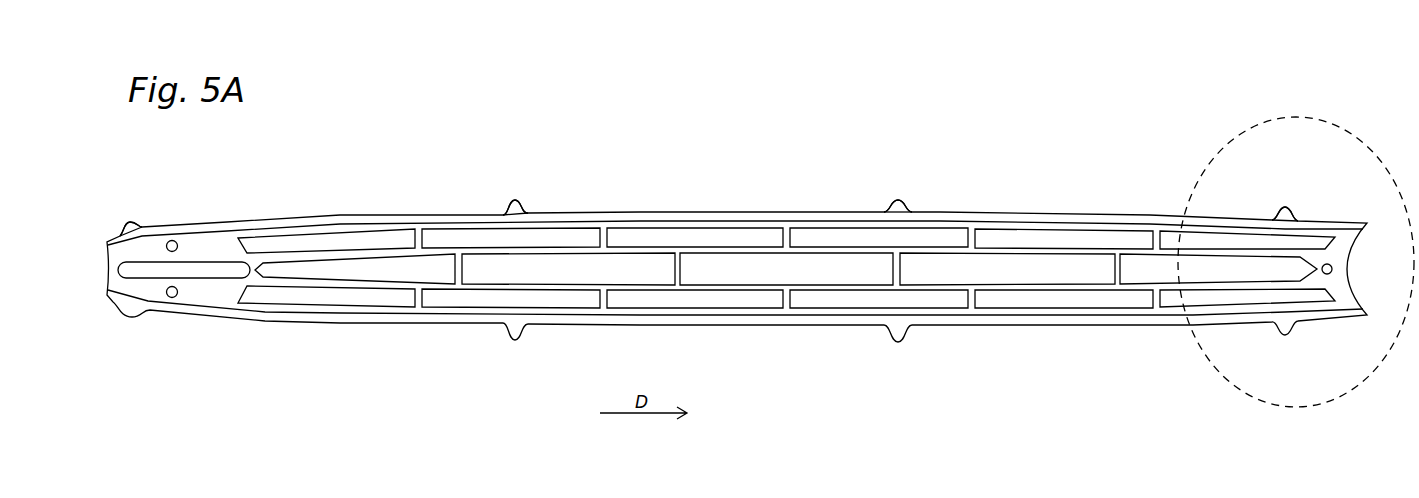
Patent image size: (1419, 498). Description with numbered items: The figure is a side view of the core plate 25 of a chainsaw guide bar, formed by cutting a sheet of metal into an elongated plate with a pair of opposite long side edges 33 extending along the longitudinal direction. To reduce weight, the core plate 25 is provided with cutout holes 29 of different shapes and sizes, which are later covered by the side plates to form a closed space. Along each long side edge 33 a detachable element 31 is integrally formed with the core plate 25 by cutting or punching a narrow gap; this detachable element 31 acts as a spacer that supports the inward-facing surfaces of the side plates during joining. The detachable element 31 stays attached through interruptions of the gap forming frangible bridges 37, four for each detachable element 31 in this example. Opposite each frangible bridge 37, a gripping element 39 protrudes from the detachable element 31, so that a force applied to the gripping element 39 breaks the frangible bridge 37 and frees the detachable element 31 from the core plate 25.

The core plate 25 is at (722, 108).
The cutout holes 29 is at (300, 243).
The detachable element 31 is at (743, 323).
The long side edges 33 is at (379, 214).
The frangible bridge 37 is at (120, 237).
The gripping element 39 is at (127, 224).